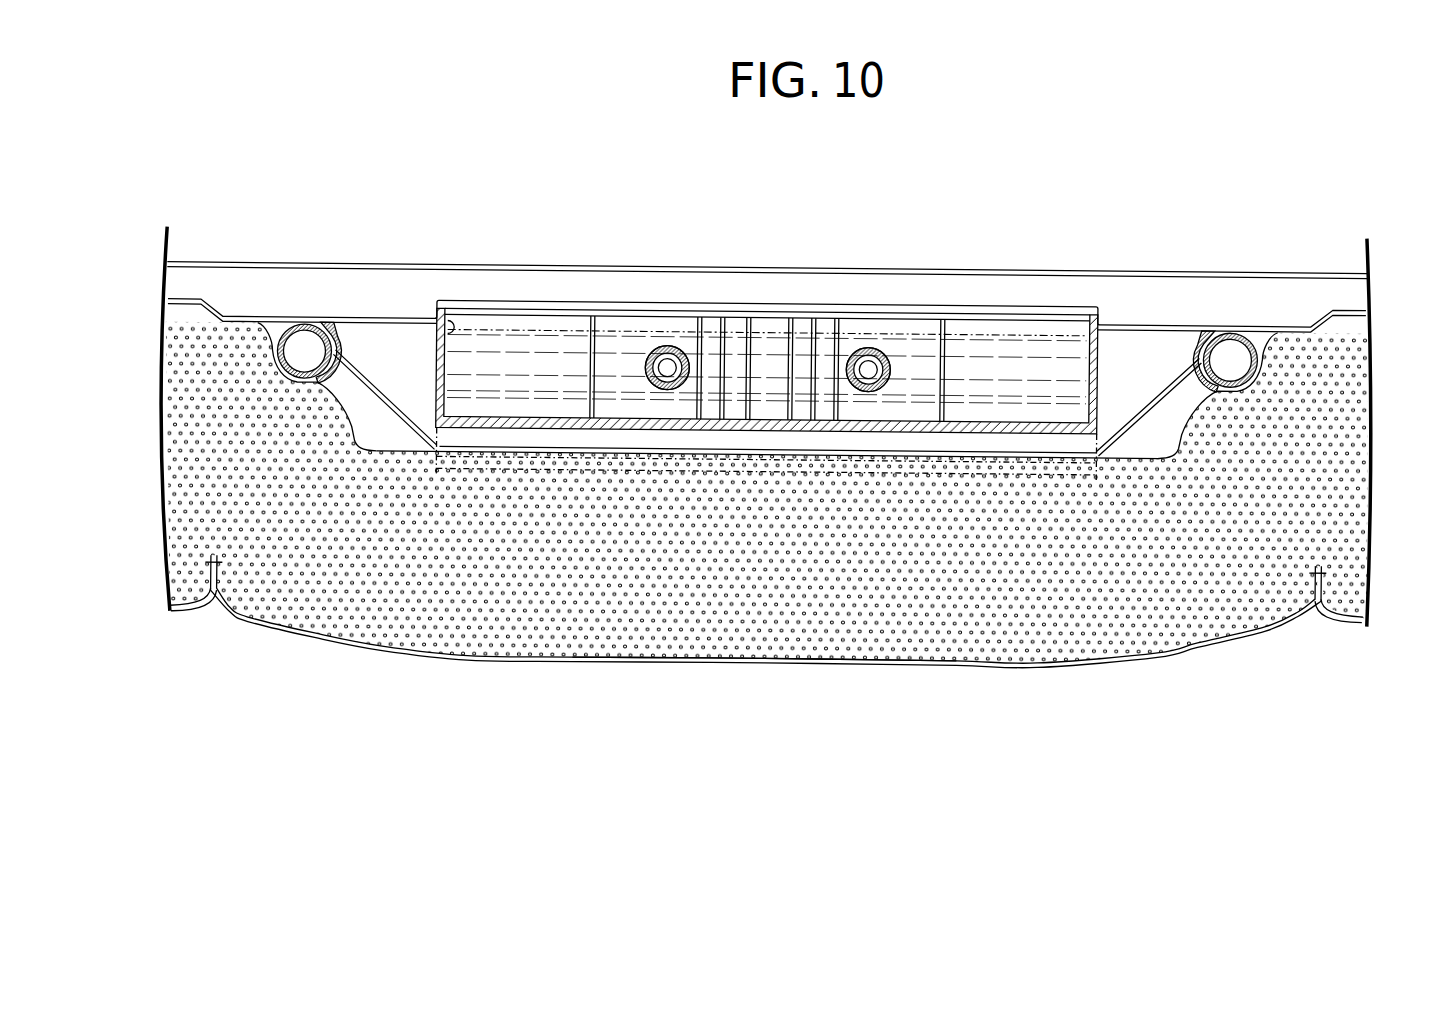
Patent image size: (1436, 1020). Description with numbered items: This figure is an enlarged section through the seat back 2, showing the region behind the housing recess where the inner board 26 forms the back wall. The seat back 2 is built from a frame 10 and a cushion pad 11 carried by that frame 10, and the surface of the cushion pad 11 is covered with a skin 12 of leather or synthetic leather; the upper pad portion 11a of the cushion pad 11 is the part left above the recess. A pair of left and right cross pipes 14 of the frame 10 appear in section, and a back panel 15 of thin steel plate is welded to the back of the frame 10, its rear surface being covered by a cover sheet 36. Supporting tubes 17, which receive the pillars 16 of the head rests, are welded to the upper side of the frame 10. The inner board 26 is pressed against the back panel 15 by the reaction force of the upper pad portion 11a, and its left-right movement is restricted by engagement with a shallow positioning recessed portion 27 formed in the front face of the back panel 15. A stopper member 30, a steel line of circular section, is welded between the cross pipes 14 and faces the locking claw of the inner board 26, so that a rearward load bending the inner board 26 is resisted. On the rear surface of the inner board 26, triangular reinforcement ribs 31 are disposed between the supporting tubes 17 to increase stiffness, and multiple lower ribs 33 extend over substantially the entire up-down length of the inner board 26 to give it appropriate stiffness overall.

The seat back 2 is at (1377, 447).
The frame 10 is at (331, 322).
The cushion pad 11 is at (1295, 502).
The upper pad portion 11a is at (767, 621).
The skin 12 is at (1182, 652).
The cross pipes 14 is at (280, 338).
The back panel 15 is at (1133, 321).
The pillars 16 is at (669, 346).
The supporting tubes 17 is at (650, 352).
The inner board 26 is at (905, 431).
The positioning recessed portion 27 is at (453, 336).
The stopper member 30 is at (540, 449).
The reinforcement ribs 31 is at (700, 410).
The ribs 33 is at (830, 309).
The cover sheet 36 is at (986, 268).